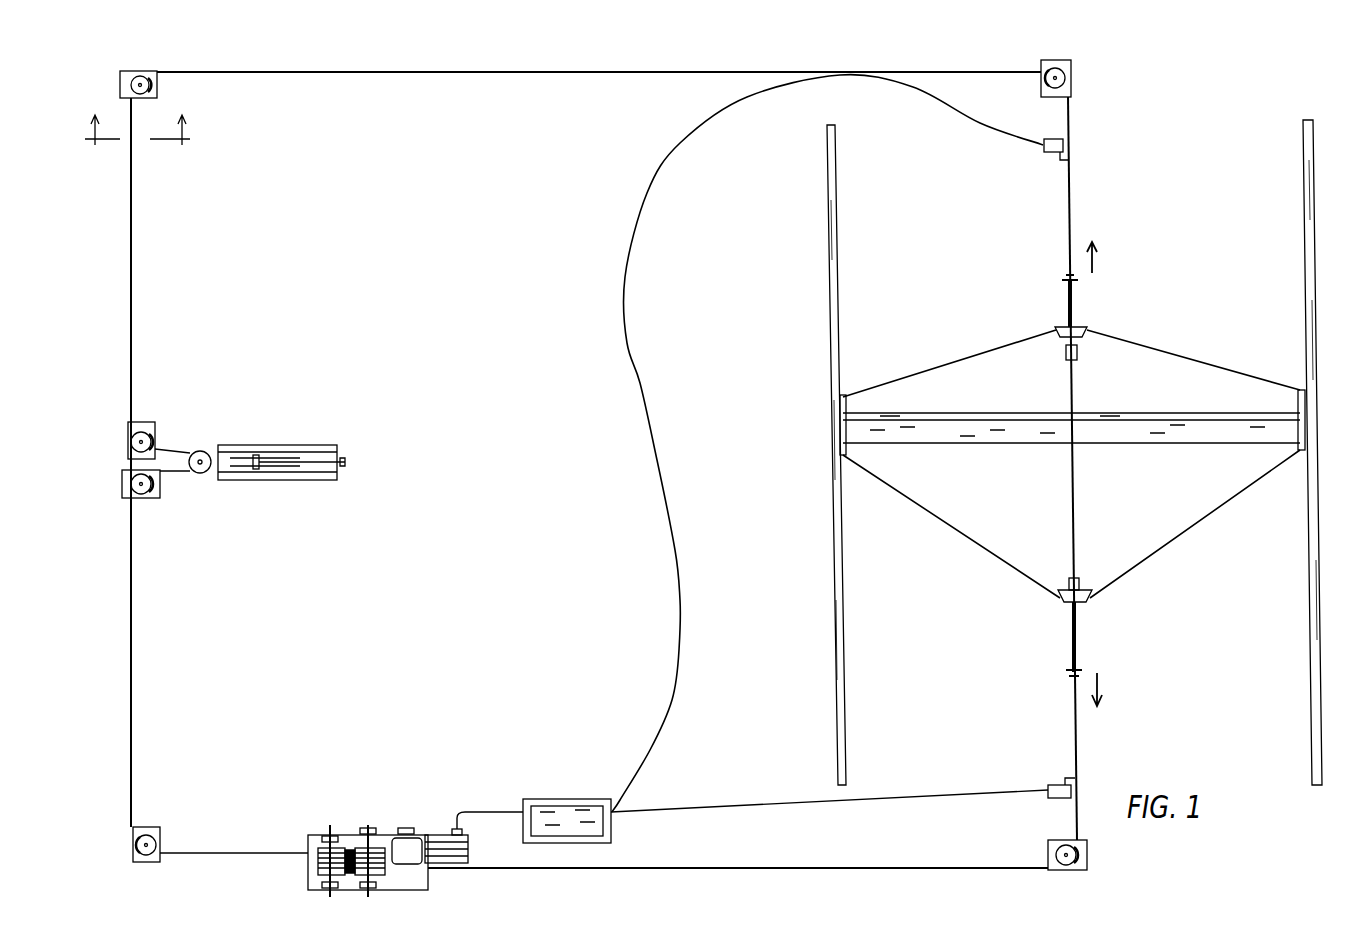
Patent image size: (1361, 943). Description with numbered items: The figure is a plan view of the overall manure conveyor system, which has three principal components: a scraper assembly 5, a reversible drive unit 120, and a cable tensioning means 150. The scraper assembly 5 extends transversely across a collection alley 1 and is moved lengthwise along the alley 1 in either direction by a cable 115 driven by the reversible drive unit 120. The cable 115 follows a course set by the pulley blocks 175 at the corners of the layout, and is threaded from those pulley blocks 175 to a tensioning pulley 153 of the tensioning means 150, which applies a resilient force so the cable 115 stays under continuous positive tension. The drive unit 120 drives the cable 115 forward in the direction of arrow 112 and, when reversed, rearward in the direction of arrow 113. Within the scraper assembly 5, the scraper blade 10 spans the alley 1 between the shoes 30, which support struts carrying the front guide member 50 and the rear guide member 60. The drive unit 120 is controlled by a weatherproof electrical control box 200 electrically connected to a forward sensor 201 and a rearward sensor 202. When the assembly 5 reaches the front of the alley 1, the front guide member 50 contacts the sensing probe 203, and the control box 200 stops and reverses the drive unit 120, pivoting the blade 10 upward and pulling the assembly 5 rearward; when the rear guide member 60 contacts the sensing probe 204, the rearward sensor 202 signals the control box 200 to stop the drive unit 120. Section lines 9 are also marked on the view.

The collection alley 1 is at (1280, 243).
The scraper assembly 5 is at (950, 332).
The section line indicator 9 is at (137, 142).
The scraper blade 10 is at (1172, 432).
The shoes 30 is at (843, 456).
The front guide member 50 is at (1080, 590).
The rear guide member 60 is at (1078, 327).
The arrow 112 is at (1097, 688).
The arrow 113 is at (1092, 266).
The cable 115 is at (583, 72).
The reversible drive unit 120 is at (391, 802).
The cable tensioning means 150 is at (223, 492).
The tensioning pulley 153 is at (200, 450).
The pulley blocks 175 is at (120, 78).
The electrical control box 200 is at (560, 850).
The forward sensor 201 is at (1048, 796).
The rearward sensor 202 is at (1042, 152).
The sensing probe 203 is at (1065, 780).
The sensing probe 204 is at (1060, 162).